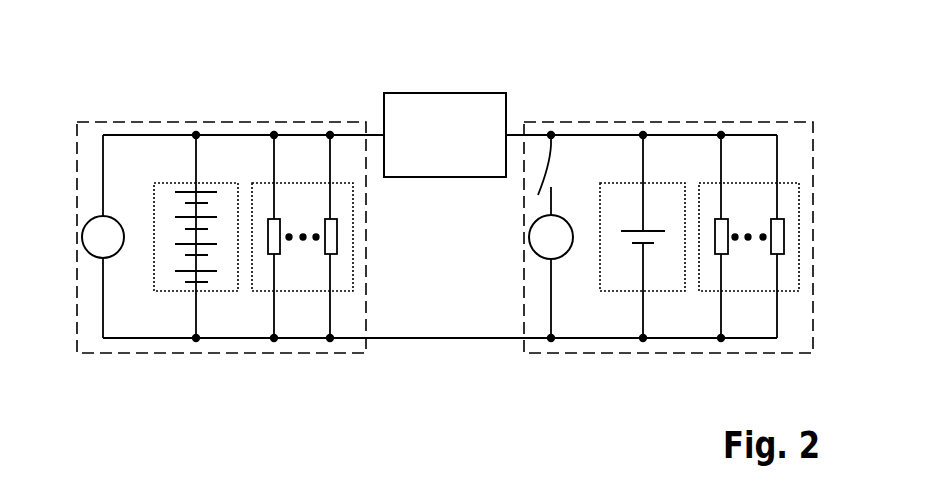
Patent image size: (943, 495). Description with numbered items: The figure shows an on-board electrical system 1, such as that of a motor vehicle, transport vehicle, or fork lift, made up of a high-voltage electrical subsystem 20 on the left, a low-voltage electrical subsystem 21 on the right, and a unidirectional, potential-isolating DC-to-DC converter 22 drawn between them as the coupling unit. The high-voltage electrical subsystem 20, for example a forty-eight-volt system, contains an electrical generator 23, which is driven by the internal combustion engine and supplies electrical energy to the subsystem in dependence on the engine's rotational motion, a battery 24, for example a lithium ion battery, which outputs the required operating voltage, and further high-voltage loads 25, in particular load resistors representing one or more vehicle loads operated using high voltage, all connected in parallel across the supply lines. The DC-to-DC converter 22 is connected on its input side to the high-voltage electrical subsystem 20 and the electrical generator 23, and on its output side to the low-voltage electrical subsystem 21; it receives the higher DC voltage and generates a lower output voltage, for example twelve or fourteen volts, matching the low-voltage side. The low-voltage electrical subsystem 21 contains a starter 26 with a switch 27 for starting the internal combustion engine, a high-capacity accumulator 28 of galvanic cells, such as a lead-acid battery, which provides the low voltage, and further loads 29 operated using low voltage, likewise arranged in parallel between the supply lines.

The on-board electrical system 1 is at (782, 84).
The high-voltage electrical subsystem 20 is at (220, 120).
The low-voltage electrical subsystem 21 is at (668, 120).
The DC-to-DC converter 22 is at (443, 92).
The electrical generator 23 is at (84, 246).
The battery 24 is at (169, 294).
The high-voltage loads 25 is at (263, 294).
The starter 26 is at (532, 247).
The switch 27 is at (548, 173).
The high-capacity accumulator 28 is at (617, 294).
The loads 29 is at (710, 294).